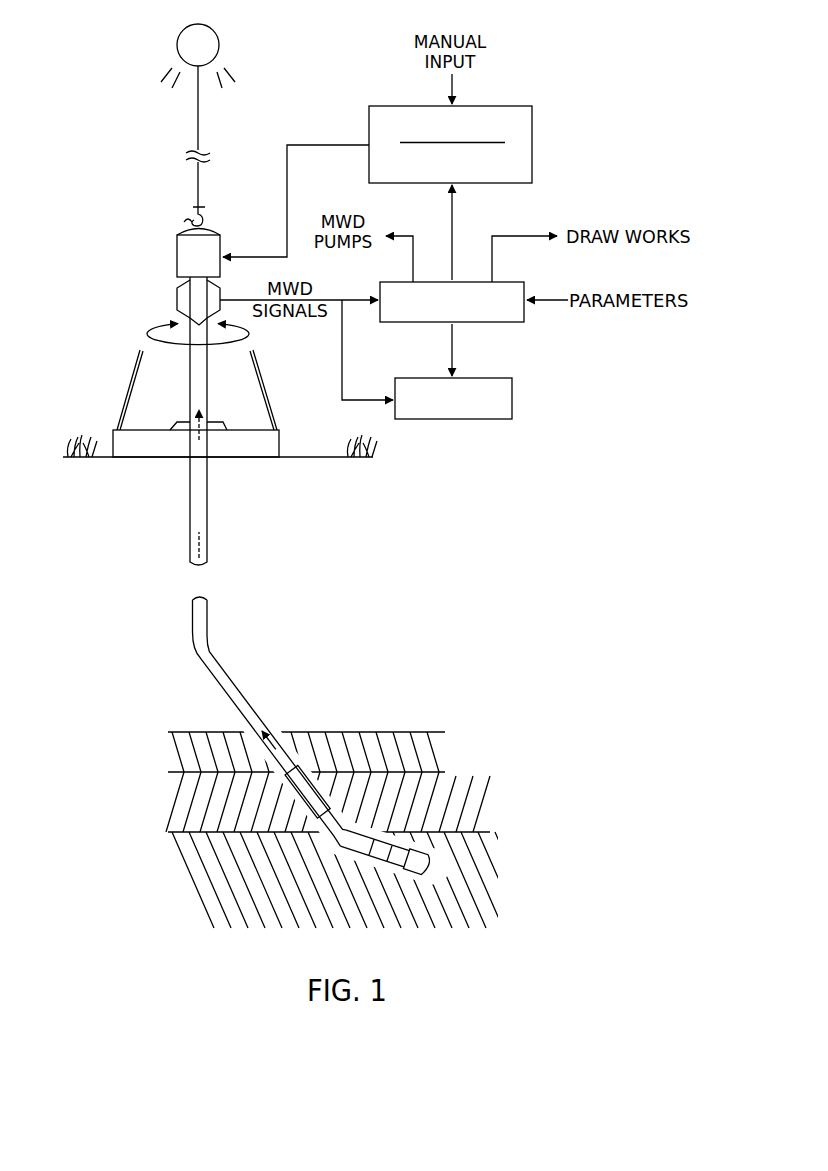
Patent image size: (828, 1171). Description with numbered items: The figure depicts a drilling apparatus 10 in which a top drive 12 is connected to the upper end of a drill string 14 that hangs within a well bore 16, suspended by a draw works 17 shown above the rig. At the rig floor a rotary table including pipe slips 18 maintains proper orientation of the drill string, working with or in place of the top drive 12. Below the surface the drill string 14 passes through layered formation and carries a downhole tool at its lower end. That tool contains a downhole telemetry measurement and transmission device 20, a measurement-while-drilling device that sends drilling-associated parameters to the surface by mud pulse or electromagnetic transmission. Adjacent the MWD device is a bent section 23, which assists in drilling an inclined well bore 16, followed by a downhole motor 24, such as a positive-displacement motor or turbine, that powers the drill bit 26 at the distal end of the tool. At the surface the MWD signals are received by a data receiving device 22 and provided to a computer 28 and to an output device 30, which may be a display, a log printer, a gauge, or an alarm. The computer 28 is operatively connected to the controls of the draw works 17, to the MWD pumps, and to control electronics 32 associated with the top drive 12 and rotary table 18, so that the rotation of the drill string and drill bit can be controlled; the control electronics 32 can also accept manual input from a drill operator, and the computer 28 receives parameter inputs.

The drilling apparatus 10 is at (116, 392).
The top drive 12 is at (177, 257).
The drill string 14 is at (209, 517).
The well bore 16 is at (310, 770).
The draw works 17 is at (172, 36).
The rotary table including pipe slips 18 is at (173, 424).
The downhole telemetry measurement and transmission device (MWD device) 20 is at (332, 794).
The data receiving device 22 is at (177, 300).
The bent section 23 is at (360, 828).
The downhole motor 24 is at (387, 864).
The drill bit 26 is at (424, 862).
The computer 28 is at (520, 282).
The output device 30 is at (513, 398).
The control electronics 32 is at (533, 133).